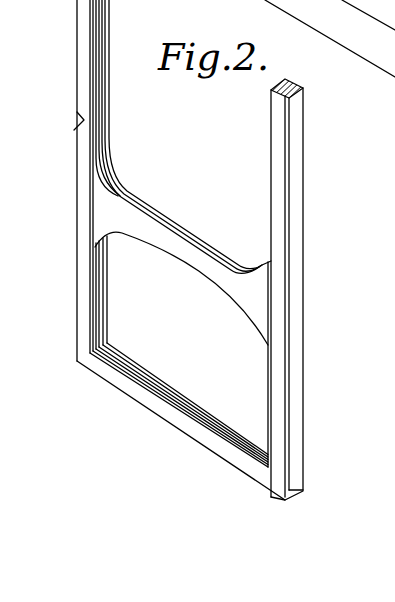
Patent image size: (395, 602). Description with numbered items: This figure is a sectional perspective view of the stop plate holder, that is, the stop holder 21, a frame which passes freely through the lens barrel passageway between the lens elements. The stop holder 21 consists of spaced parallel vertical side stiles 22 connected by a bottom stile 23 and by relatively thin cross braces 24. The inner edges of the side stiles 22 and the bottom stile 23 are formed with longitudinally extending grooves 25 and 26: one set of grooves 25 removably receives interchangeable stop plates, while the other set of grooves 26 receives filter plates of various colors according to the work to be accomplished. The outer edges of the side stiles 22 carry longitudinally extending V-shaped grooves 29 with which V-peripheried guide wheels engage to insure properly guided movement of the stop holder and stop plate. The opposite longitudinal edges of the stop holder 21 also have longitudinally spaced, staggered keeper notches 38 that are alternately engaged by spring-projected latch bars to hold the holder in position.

The stop holder 21 is at (74, 362).
The side stiles 22 is at (77, 233).
The bottom stile 23 is at (163, 417).
The cross braces 24 is at (180, 242).
The grooves 25 is at (100, 35).
The grooves 26 is at (106, 90).
The V-shaped grooves 29 is at (295, 223).
The keeper notches 38 is at (76, 126).